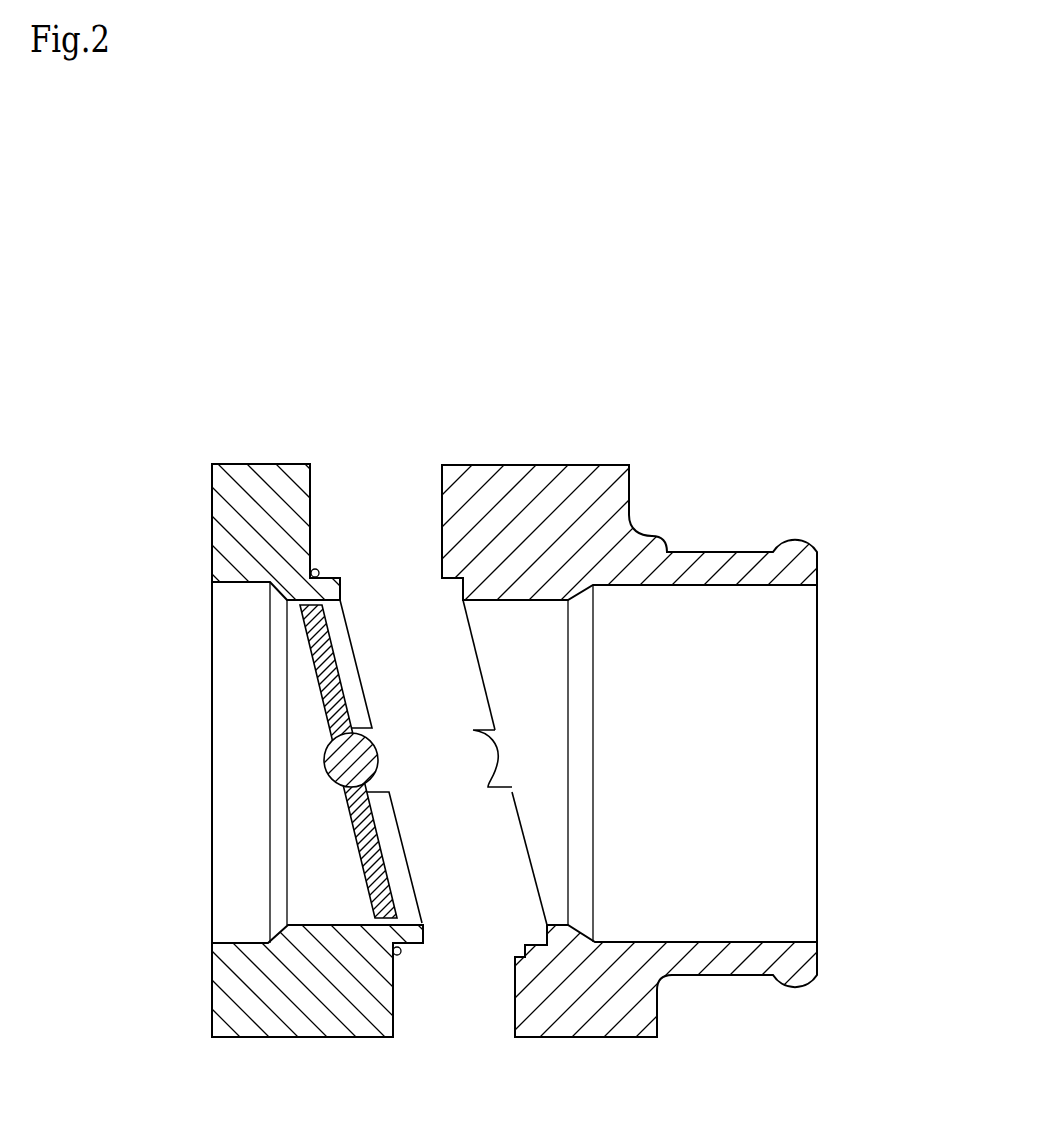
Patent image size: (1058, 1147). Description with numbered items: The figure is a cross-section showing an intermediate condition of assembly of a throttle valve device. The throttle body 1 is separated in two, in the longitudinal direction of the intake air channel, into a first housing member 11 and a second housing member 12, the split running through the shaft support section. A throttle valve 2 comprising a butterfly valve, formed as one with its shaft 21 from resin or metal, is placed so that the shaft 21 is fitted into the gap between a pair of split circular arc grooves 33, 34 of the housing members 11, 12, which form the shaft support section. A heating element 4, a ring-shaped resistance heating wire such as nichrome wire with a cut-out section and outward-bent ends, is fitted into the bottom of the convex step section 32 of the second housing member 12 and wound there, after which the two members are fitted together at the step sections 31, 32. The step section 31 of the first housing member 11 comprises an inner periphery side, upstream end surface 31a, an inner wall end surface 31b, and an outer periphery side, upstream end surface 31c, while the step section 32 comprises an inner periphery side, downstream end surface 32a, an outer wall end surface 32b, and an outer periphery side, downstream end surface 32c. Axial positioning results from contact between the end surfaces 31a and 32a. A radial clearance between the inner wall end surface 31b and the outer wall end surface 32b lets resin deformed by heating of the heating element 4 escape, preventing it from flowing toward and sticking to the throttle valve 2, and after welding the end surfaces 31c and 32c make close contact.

The throttle body 1 is at (667, 468).
The throttle valve 2 is at (317, 638).
The heating element 4 is at (316, 569).
The first housing member 11 is at (717, 968).
The second housing member 12 is at (233, 989).
The shaft 21 is at (337, 787).
The step section 31 is at (444, 585).
The inner periphery side, upstream end surface 31a is at (545, 925).
The inner wall end surface 31b is at (528, 948).
The outer periphery side, upstream end surface 31c is at (517, 997).
The step section 32 is at (341, 578).
The inner periphery side, downstream end surface 32a is at (423, 940).
The outer wall end surface 32b is at (400, 953).
The outer periphery side, downstream end surface 32c is at (393, 1010).
The split circular arc groove 33 is at (493, 758).
The split circular arc groove 34 is at (323, 753).